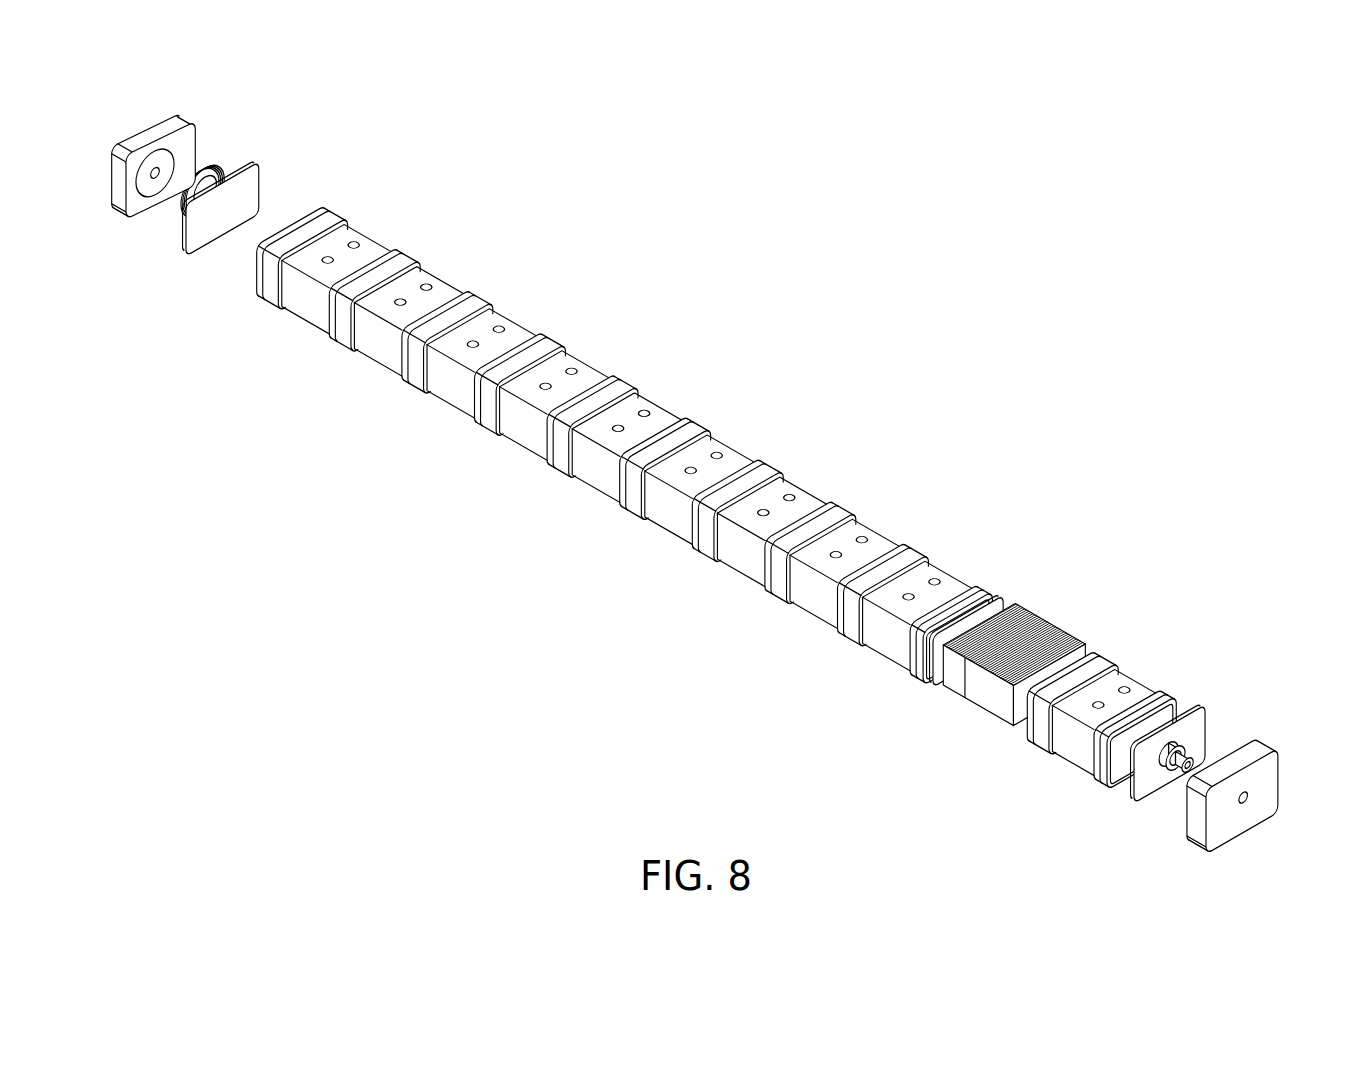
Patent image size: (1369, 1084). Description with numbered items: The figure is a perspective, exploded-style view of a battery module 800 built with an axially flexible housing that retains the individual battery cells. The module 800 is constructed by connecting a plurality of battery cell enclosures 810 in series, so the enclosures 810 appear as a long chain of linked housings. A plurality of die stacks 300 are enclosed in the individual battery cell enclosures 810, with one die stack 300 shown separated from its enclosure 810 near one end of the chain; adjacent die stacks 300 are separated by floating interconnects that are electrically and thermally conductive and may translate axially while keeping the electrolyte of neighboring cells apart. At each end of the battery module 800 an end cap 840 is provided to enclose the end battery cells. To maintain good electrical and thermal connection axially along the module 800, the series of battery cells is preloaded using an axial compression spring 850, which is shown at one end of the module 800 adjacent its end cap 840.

The battery module 800 is at (762, 367).
The battery cell enclosure 810 is at (1143, 676).
The end cap 840 is at (198, 139).
The axial compression spring 850 is at (174, 209).
The die stack 300 is at (1053, 618).